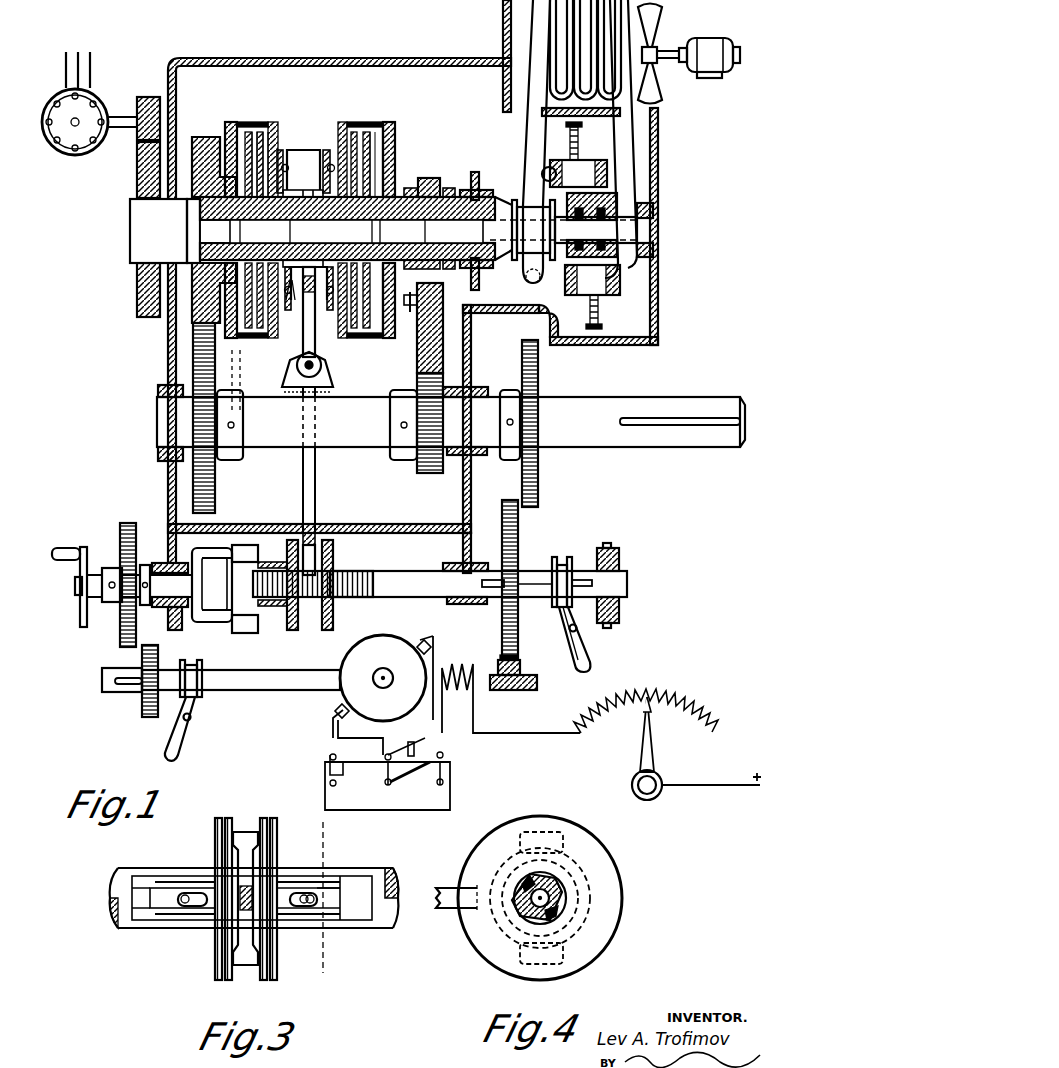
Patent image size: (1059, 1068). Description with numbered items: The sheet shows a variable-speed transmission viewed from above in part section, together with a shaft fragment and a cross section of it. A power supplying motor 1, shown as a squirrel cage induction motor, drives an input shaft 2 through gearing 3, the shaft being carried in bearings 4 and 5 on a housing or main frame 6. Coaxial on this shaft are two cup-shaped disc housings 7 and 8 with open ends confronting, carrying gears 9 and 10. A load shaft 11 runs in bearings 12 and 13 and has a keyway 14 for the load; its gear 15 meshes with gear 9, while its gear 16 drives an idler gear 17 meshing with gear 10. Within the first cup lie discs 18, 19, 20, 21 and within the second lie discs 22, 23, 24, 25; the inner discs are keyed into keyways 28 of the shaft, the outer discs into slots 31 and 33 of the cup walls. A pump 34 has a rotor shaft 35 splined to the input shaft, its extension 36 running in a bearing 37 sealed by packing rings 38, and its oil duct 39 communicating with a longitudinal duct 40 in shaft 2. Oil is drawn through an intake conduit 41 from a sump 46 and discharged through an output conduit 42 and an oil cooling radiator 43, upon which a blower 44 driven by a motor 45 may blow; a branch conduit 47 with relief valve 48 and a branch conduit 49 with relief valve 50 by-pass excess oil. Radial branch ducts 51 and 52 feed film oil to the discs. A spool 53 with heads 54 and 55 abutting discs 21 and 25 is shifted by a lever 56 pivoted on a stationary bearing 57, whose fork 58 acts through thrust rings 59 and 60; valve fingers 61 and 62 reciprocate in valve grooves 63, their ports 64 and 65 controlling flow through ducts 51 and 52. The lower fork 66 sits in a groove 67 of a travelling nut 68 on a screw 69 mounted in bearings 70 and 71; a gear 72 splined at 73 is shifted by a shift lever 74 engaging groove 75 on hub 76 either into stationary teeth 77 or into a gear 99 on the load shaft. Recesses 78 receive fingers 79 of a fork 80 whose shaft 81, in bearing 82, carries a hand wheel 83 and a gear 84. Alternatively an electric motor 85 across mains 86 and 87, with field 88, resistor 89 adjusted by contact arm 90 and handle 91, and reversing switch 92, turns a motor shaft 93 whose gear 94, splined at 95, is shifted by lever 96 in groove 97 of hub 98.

In FIG. 1, the power supplying motor 1 is at (55, 150).
In FIG. 1, the input shaft 2 is at (130, 228).
In FIG. 3, the input shaft 2 is at (112, 882).
In FIG. 1, the gearing 3 is at (137, 140).
In FIG. 1, the bearing 4 is at (172, 200).
In FIG. 3, the bearing 4 is at (330, 832).
In FIG. 1, the bearing 5 is at (480, 193).
In FIG. 1, the housing or main frame 6 is at (168, 335).
In FIG. 1, the disc housing 7 is at (236, 103).
In FIG. 1, the disc housing 8 is at (372, 338).
In FIG. 1, the gear 9 is at (205, 138).
In FIG. 1, the gear 10 is at (430, 178).
In FIG. 1, the load shaft 11 is at (318, 390).
In FIG. 1, the bearing 12 is at (158, 390).
In FIG. 1, the bearing 13 is at (465, 395).
In FIG. 1, the keyway 14 is at (680, 420).
In FIG. 1, the gear 15 is at (215, 475).
In FIG. 1, the gear 16 is at (418, 470).
In FIG. 1, the idler gear 17 is at (440, 305).
In FIG. 1, the disc 18 is at (248, 132).
In FIG. 1, the disc 19 is at (256, 215).
In FIG. 1, the disc 20 is at (270, 132).
In FIG. 1, the disc 21 is at (275, 148).
In FIG. 1, the disc 22 is at (388, 122).
In FIG. 1, the disc 23 is at (372, 132).
In FIG. 1, the disc 24 is at (360, 210).
In FIG. 1, the disc 25 is at (352, 132).
In FIG. 1, the keyway 28 is at (316, 197).
In FIG. 3, the keyway 28 is at (297, 878).
In FIG. 4, the keyway 28 is at (568, 897).
In FIG. 1, the slot or keyway 31 is at (278, 127).
In FIG. 1, the slot or keyway 33 is at (338, 132).
In FIG. 1, the pump 34 is at (528, 260).
In FIG. 1, the rotor shaft 35 is at (508, 210).
In FIG. 1, the rotor shaft extension 36 is at (596, 225).
In FIG. 1, the bearing 37 is at (653, 205).
In FIG. 1, the packing rings 38 is at (653, 246).
In FIG. 1, the oil duct 39 is at (600, 222).
In FIG. 1, the oil duct 40 is at (356, 228).
In FIG. 1, the intake conduit 41 is at (526, 282).
In FIG. 1, the output conduit 42 is at (523, 138).
In FIG. 1, the oil cooling radiator 43 is at (560, 62).
In FIG. 1, the blower 44 is at (655, 28).
In FIG. 1, the motor 45 is at (700, 42).
In FIG. 1, the sump 46 is at (540, 310).
In FIG. 1, the branch conduit 47 is at (572, 160).
In FIG. 1, the pressure relief valve 48 is at (566, 182).
In FIG. 1, the branch conduit 49 is at (632, 285).
In FIG. 1, the pressure relief valve 50 is at (575, 272).
In FIG. 1, the radial branch duct 51 is at (252, 231).
In FIG. 3, the radial branch duct 51 is at (178, 915).
In FIG. 1, the radial branch duct 52 is at (383, 231).
In FIG. 3, the radial branch duct 52 is at (322, 885).
In FIG. 1, the spool 53 is at (312, 174).
In FIG. 1, the head or flange 54 is at (282, 150).
In FIG. 3, the head or flange 54 is at (218, 820).
In FIG. 1, the head or flange 55 is at (326, 150).
In FIG. 3, the head or flange 55 is at (276, 820).
In FIG. 1, the lever 56 is at (304, 338).
In FIG. 4, the lever 56 is at (448, 908).
In FIG. 1, the stationary bearing 57 is at (293, 367).
In FIG. 1, the fork 58 is at (313, 225).
In FIG. 3, the fork 58 is at (246, 832).
In FIG. 4, the fork 58 is at (480, 855).
In FIG. 1, the ring 59 is at (296, 214).
In FIG. 3, the ring 59 is at (230, 820).
In FIG. 1, the ring 60 is at (321, 214).
In FIG. 3, the ring 60 is at (264, 820).
In FIG. 1, the valve finger 61 is at (200, 243).
In FIG. 3, the valve finger 61 is at (142, 920).
In FIG. 1, the valve finger 62 is at (412, 231).
In FIG. 3, the valve finger 62 is at (350, 912).
In FIG. 4, the valve finger 62 is at (558, 885).
In FIG. 1, the valve groove 63 is at (200, 248).
In FIG. 3, the valve groove 63 is at (125, 930).
In FIG. 4, the valve groove 63 is at (570, 908).
In FIG. 1, the valve port 64 is at (279, 231).
In FIG. 3, the valve port 64 is at (200, 910).
In FIG. 1, the valve port 65 is at (365, 231).
In FIG. 3, the valve port 65 is at (300, 885).
In FIG. 1, the fork 66 is at (320, 552).
In FIG. 1, the groove 67 is at (315, 622).
In FIG. 1, the travelling nut 68 is at (335, 608).
In FIG. 1, the screw 69 is at (380, 597).
In FIG. 1, the bearing 70 is at (612, 555).
In FIG. 1, the bearing 71 is at (460, 600).
In FIG. 1, the gear 72 is at (518, 525).
In FIG. 1, the spline 73 is at (496, 580).
In FIG. 1, the shift lever 74 is at (585, 652).
In FIG. 1, the groove 75 is at (560, 562).
In FIG. 1, the hub 76 is at (530, 571).
In FIG. 1, the stationary teeth 77 is at (520, 666).
In FIG. 1, the recess 78 is at (240, 545).
In FIG. 1, the finger 79 is at (215, 625).
In FIG. 1, the fork 80 is at (212, 585).
In FIG. 1, the shank or shaft 81 is at (163, 565).
In FIG. 1, the bearing 82 is at (168, 612).
In FIG. 1, the hand wheel 83 is at (84, 548).
In FIG. 1, the gear 84 is at (126, 523).
In FIG. 1, the electric motor 85 is at (340, 660).
In FIG. 1, the supply main 86 is at (712, 785).
In FIG. 1, the supply main 87 is at (300, 746).
In FIG. 1, the field 88 is at (457, 666).
In FIG. 1, the resistor 89 is at (672, 693).
In FIG. 1, the contact arm 90 is at (651, 745).
In FIG. 1, the handle 91 is at (660, 792).
In FIG. 1, the reversing switch 92 is at (408, 760).
In FIG. 1, the motor shaft 93 is at (280, 690).
In FIG. 1, the gear 94 is at (142, 708).
In FIG. 1, the spline 95 is at (130, 678).
In FIG. 1, the shift lever 96 is at (178, 745).
In FIG. 1, the groove 97 is at (192, 665).
In FIG. 1, the hub 98 is at (166, 670).
In FIG. 1, the gear 99 is at (540, 497).